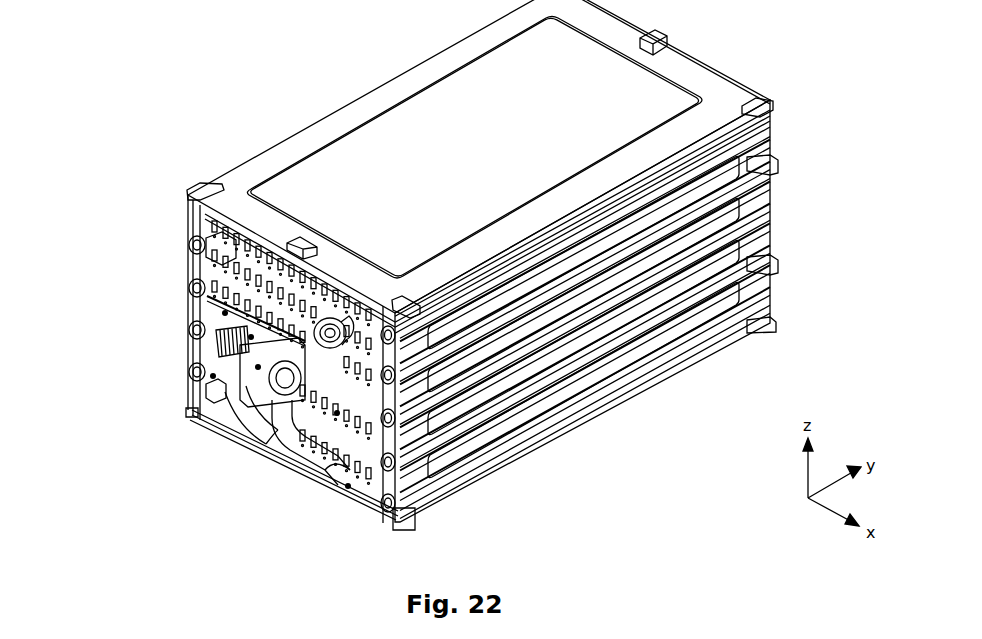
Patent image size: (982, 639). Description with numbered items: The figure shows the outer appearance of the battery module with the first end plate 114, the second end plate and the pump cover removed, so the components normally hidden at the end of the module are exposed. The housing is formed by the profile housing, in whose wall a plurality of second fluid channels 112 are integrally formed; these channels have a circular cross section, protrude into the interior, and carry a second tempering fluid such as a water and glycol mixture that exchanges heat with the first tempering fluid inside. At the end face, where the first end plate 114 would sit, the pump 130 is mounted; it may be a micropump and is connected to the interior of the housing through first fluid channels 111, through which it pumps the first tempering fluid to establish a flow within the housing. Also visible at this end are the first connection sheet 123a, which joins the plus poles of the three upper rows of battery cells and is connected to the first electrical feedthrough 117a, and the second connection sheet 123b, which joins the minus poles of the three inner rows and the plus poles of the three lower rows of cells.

The first end plate 114 is at (460, 113).
The second fluid channels 112 is at (190, 370).
The first connection sheet 123a is at (196, 240).
The second connection sheet 123b is at (208, 393).
The pump 130 is at (263, 377).
The first fluid channels 111 is at (292, 443).
The first electrical feedthrough 117a is at (328, 345).